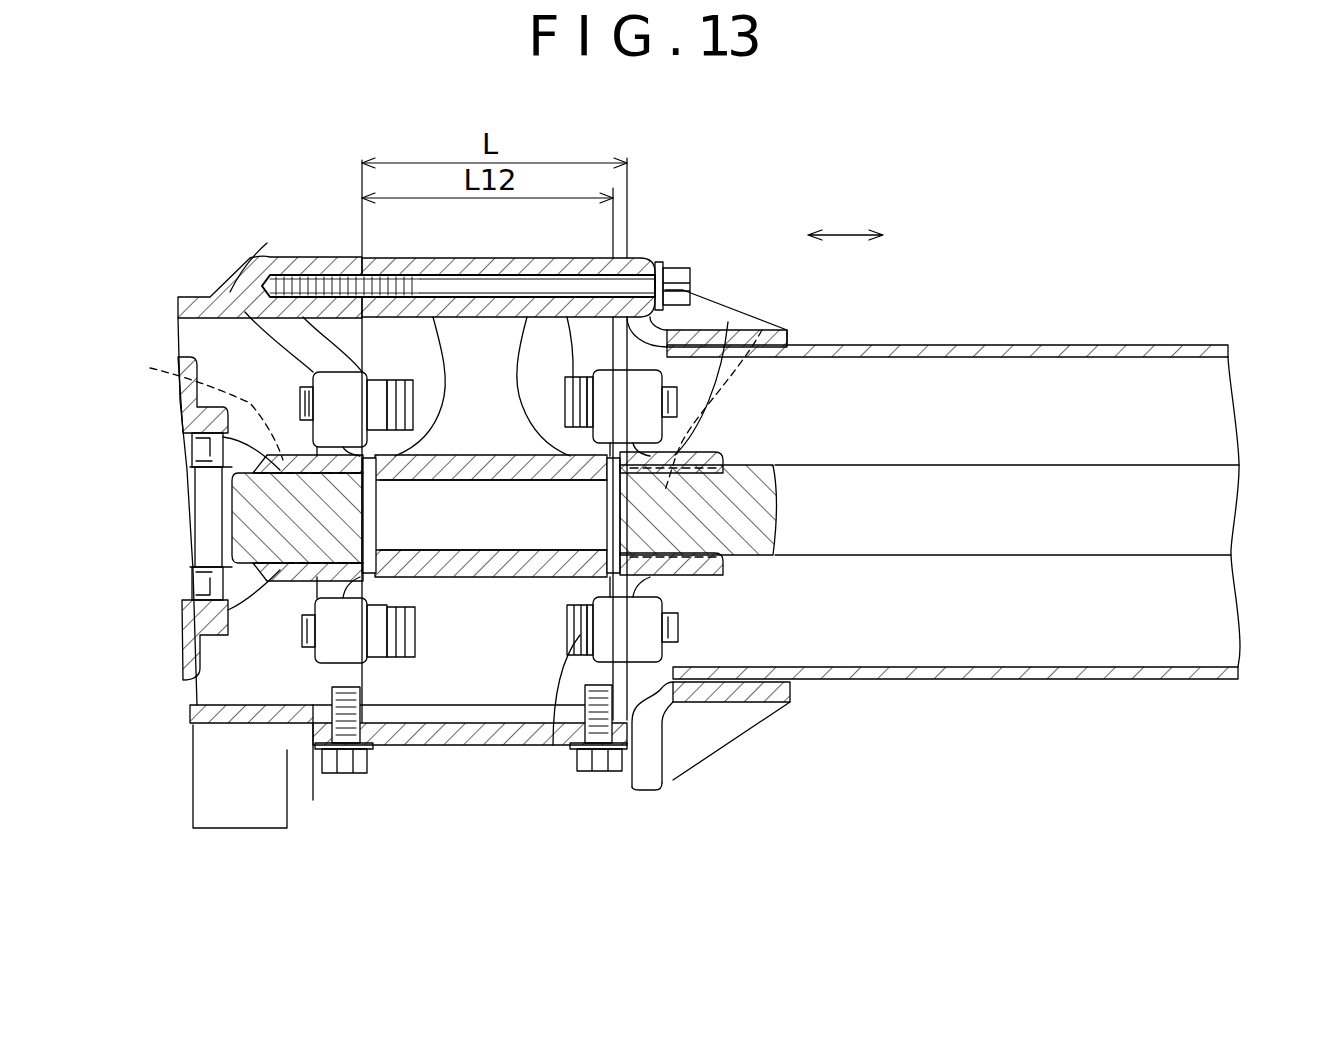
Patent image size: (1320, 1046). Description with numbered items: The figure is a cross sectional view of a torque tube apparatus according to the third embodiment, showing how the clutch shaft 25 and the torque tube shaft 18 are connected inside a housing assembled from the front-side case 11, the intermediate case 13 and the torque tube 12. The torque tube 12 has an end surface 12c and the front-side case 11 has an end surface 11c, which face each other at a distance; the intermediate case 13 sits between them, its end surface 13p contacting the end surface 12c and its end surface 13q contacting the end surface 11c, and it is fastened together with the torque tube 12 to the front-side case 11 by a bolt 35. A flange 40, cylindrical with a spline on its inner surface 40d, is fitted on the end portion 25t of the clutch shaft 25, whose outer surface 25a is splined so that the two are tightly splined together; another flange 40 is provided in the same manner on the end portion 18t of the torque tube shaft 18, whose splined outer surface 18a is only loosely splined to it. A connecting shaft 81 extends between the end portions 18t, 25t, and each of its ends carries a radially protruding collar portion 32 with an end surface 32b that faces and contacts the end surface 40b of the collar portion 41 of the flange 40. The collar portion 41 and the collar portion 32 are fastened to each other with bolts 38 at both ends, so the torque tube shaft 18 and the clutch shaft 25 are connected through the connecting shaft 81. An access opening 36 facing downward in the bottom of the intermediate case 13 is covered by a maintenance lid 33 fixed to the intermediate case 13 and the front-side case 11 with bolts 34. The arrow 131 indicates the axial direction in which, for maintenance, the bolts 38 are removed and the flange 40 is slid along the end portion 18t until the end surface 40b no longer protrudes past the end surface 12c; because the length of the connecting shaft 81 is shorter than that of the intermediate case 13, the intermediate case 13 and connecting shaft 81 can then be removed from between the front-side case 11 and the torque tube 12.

The front-side case 11 is at (267, 243).
The end surface 13q is at (345, 263).
The flange 40 is at (245, 312).
The end surface 40b is at (303, 317).
The end surface 11c is at (383, 282).
The intermediate case 13 is at (466, 265).
The bolts 38 is at (545, 265).
The end surface 12c is at (588, 265).
The end surface 13p is at (648, 262).
The bolt 35 is at (675, 268).
The collar portion 41 is at (700, 330).
The outer surface 18a is at (763, 332).
The inner surface 40d is at (753, 500).
The axial direction 131 is at (850, 232).
The torque tube 12 is at (965, 346).
The torque tube shaft 18 is at (1057, 503).
The outer surface 25a is at (191, 401).
The clutch shaft 25 is at (202, 492).
The end portion 25t is at (345, 525).
The end surface 32b is at (348, 633).
The collar portion 32 is at (400, 657).
The connecting shaft 81 is at (438, 265).
The maintenance lid 33 is at (485, 745).
The access opening 36 is at (560, 749).
The bolts 34 is at (598, 771).
The end portion 18t is at (733, 700).